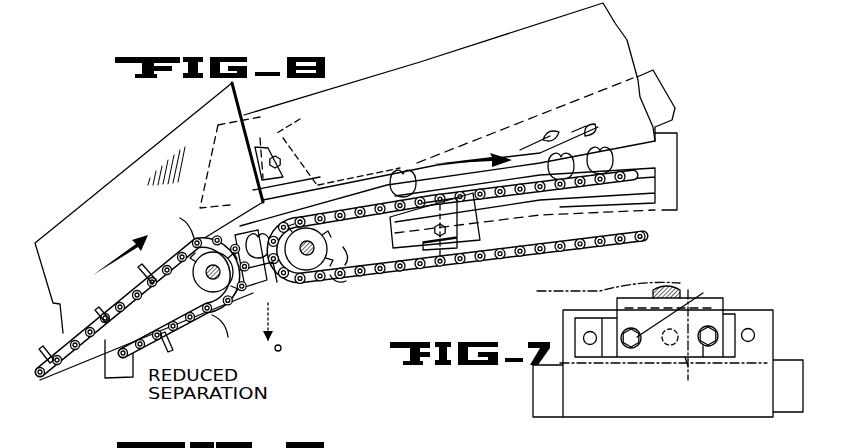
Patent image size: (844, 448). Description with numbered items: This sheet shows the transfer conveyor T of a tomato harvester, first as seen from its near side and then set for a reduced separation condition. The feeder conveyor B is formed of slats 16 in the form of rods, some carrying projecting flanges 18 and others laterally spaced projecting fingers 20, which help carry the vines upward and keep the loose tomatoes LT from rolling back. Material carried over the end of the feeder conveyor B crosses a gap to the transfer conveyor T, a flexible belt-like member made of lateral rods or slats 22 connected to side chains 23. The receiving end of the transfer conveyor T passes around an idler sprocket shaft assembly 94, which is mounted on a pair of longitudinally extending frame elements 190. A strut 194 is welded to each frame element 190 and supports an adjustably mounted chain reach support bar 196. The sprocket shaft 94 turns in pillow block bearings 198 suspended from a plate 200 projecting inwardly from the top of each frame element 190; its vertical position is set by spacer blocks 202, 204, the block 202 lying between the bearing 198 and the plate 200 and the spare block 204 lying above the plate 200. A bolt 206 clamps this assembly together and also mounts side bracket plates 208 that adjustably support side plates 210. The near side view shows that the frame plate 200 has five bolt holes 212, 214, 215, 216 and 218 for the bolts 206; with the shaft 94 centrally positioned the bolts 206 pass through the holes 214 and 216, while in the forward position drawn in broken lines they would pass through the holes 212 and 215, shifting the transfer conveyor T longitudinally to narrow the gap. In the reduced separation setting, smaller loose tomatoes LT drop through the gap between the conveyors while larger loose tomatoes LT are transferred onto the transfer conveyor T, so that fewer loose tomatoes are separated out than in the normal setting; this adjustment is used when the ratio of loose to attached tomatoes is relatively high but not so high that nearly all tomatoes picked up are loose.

In FIG. 8, the slats 16 is at (125, 310).
In FIG. 8, the projecting flanges 18 is at (155, 278).
In FIG. 8, the projecting fingers 20 is at (100, 311).
In FIG. 8, the lateral rods or slats 22 is at (461, 264).
In FIG. 8, the side chains 23 is at (657, 230).
In FIG. 8, the idler sprocket shaft assembly 94 is at (297, 287).
In FIG. 7, the idler sprocket shaft assembly 94 is at (672, 290).
In FIG. 8, the frame elements 190 is at (660, 85).
In FIG. 8, the strut 194 is at (667, 155).
In FIG. 8, the chain reach support bars 196 is at (663, 193).
In FIG. 8, the pillow block bearings 198 is at (340, 286).
In FIG. 8, the plate 200 is at (326, 174).
In FIG. 7, the plate 200 is at (710, 408).
In FIG. 8, the spacer block 202 is at (333, 214).
In FIG. 8, the spacer block 204 is at (325, 173).
In FIG. 7, the spacer block 204 is at (607, 358).
In FIG. 7, the bolt 206 is at (712, 328).
In FIG. 8, the side bracket plates 208 is at (307, 145).
In FIG. 7, the side bracket plates 208 is at (658, 350).
In FIG. 8, the side plates 210 is at (575, 61).
In FIG. 7, the bolt hole 212 is at (585, 336).
In FIG. 7, the bolt hole 214 is at (631, 358).
In FIG. 7, the bolt hole 215 is at (687, 360).
In FIG. 7, the bolt hole 216 is at (703, 358).
In FIG. 7, the bolt hole 218 is at (750, 328).
In FIG. 8, the feeder conveyor B is at (70, 330).
In FIG. 8, the transfer conveyor T is at (515, 140).
In FIG. 8, the loose tomatoes LT is at (257, 240).